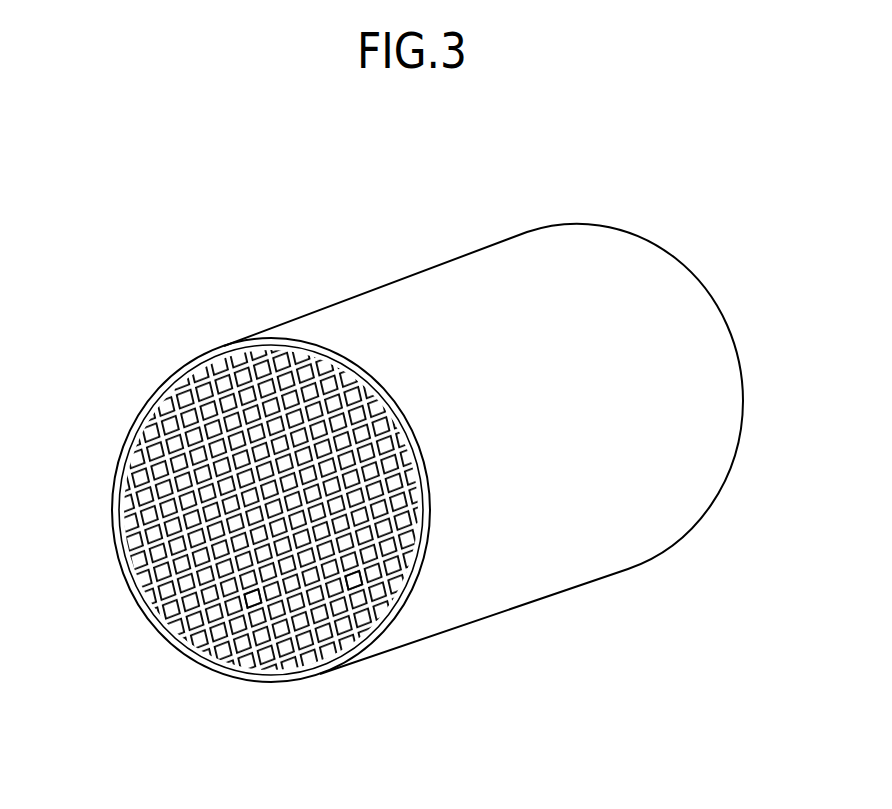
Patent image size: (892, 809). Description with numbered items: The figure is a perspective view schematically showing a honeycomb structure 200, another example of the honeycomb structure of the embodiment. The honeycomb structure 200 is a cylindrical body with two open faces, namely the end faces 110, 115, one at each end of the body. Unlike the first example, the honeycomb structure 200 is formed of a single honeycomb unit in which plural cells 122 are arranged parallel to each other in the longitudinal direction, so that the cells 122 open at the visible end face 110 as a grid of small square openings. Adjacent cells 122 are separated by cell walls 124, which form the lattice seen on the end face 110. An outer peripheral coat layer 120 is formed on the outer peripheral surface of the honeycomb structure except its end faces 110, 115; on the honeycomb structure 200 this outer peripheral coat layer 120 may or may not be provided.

The honeycomb structure 200 is at (419, 440).
The end face 110 is at (231, 524).
The end face 115 is at (515, 449).
The outer peripheral coat layer 120 is at (537, 570).
The cell 122 is at (355, 587).
The cell wall 124 is at (250, 597).